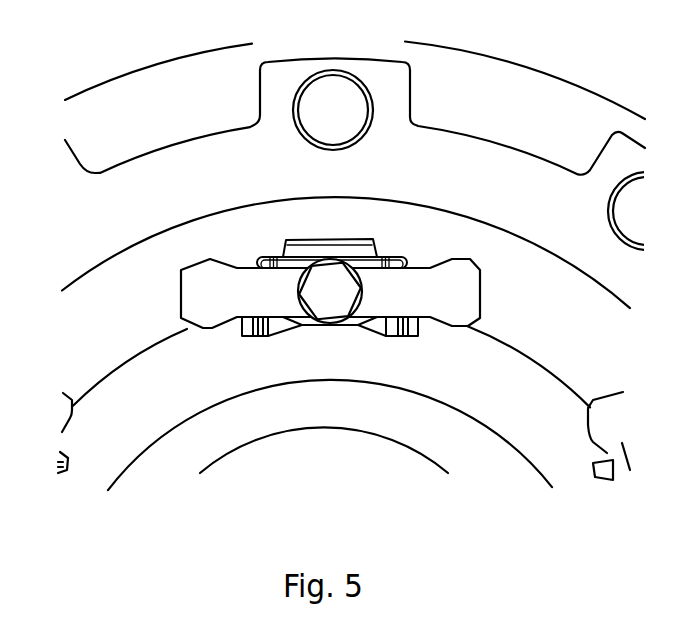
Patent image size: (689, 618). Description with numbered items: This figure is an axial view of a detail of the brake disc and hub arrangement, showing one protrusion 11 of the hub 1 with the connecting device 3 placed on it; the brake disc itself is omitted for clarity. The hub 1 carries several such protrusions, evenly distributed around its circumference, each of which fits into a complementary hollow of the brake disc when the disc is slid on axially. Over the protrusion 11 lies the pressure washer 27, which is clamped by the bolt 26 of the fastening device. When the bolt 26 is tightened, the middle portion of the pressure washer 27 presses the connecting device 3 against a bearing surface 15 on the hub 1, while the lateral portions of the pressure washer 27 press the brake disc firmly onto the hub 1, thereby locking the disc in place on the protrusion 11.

The hub 1 is at (524, 303).
The connecting device 3 is at (407, 262).
The protrusion 11 is at (384, 330).
The bearing surface 15 is at (325, 250).
The bolt 26 is at (331, 306).
The pressure washer 27 is at (430, 318).